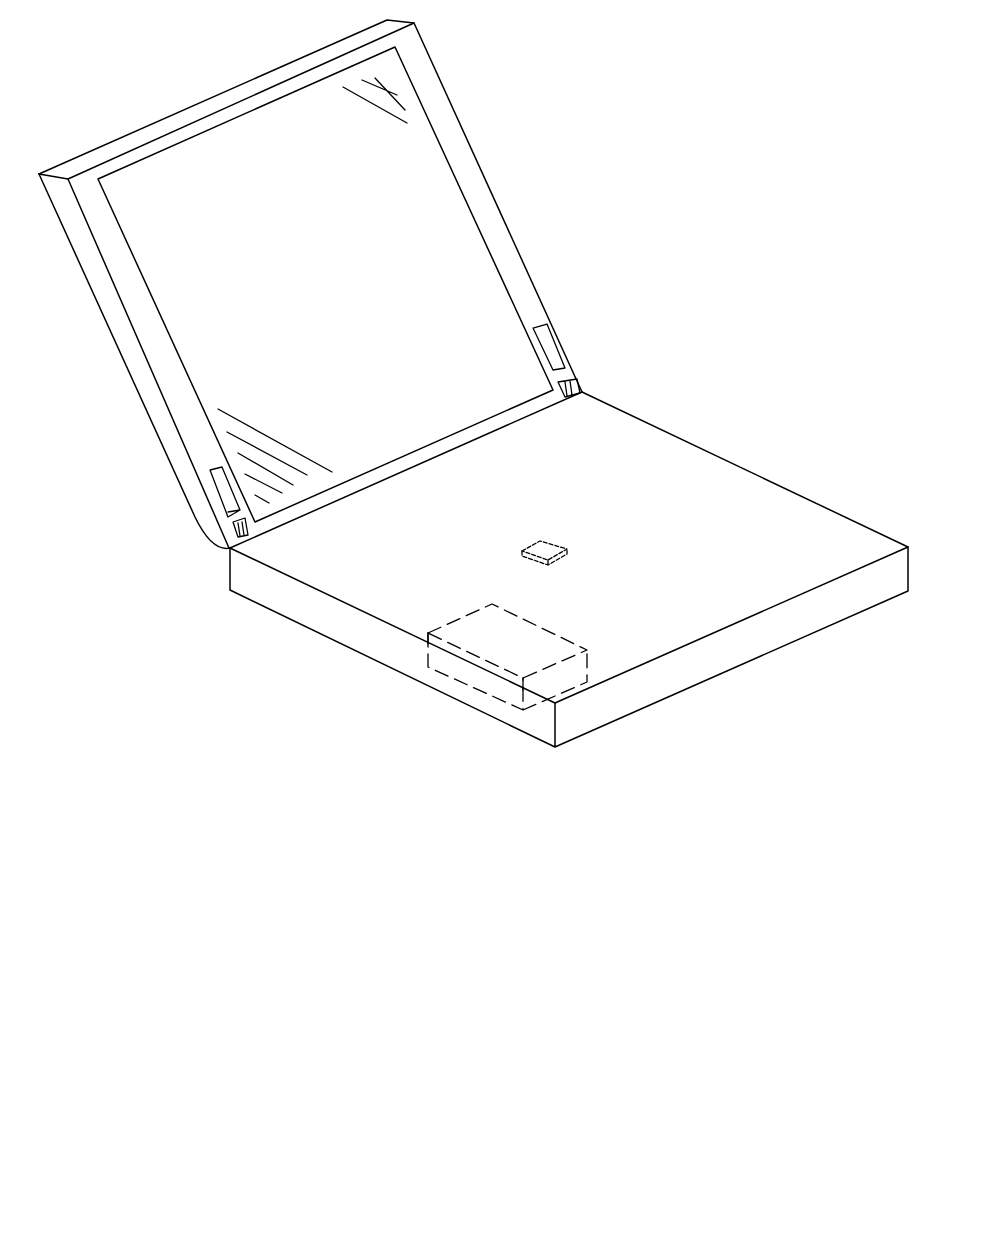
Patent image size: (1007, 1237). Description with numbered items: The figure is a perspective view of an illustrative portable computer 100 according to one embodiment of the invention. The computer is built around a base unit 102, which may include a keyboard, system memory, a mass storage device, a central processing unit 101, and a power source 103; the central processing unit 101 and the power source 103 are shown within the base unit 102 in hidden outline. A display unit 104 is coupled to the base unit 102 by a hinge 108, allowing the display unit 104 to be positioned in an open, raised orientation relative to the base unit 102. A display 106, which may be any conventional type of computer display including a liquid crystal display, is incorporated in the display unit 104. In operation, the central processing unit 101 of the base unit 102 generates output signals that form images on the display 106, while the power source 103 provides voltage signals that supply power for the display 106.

The portable computer 100 is at (712, 130).
The central processing unit 101 is at (557, 545).
The base unit 102 is at (737, 643).
The power source 103 is at (548, 667).
The display unit 104 is at (152, 386).
The display 106 is at (260, 157).
The hinge 108 is at (230, 522).